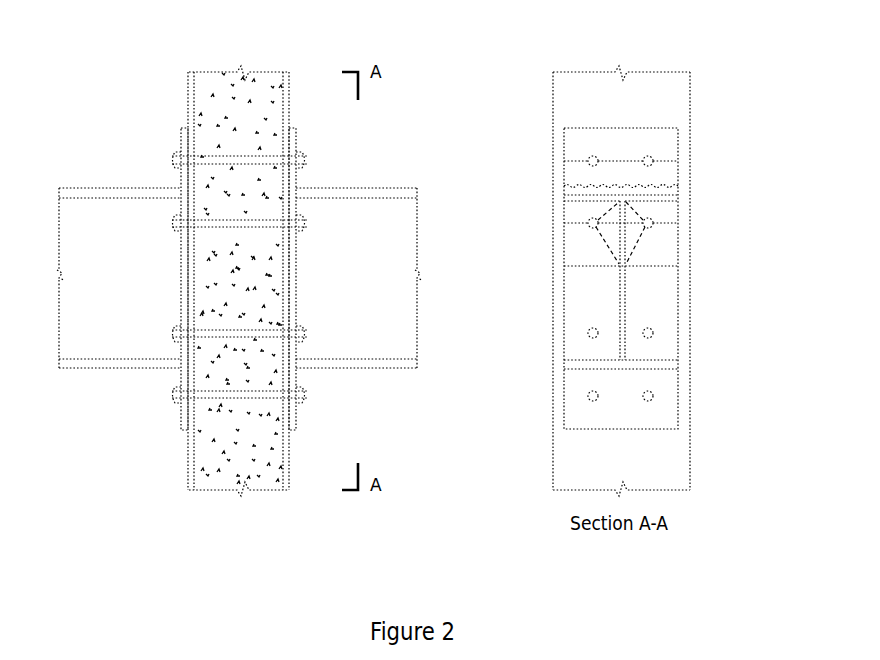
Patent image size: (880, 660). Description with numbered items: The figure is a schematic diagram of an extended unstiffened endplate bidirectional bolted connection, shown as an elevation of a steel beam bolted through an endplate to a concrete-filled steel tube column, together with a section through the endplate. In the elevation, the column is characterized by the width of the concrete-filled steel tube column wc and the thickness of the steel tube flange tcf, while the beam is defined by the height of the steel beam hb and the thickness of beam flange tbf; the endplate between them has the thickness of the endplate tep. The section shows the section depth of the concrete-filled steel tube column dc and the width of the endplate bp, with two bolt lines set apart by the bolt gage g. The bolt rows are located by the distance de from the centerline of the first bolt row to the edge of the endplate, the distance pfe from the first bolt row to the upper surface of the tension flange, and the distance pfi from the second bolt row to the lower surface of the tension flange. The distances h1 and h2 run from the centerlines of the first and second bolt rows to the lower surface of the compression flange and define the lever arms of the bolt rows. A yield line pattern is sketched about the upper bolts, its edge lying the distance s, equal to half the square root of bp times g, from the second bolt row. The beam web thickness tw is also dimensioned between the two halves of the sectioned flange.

The width of the concrete-filled steel tube column wc is at (289, 62).
The thickness of the steel tube flange tcf is at (217, 103).
The thickness of beam flange tbf is at (88, 168).
The height of the steel beam hb is at (37, 188).
The thickness of the endplate tep is at (215, 285).
The section depth of the concrete-filled steel tube column dc is at (690, 62).
The width of the endplate bp is at (678, 118).
The distance from the centerline of the first bolt row to the edge of the endplate de is at (745, 119).
The distance from centerline of the first bolt row to upper surface of tension flang pfe is at (746, 153).
The distance from centerline of the second bolt row to lower surface of tension flan pfi is at (744, 210).
The distance from centerline of second bolt row to edge of the yield line pattern s is at (708, 84).
The distance from centerline of first bolt row to lower surface of compression flang h1 is at (480, 161).
The distance from centerline of second bolt row to lower surface of the compression h2 is at (545, 223).
The beam web thickness tw is at (645, 294).
The bolt gage g is at (678, 456).